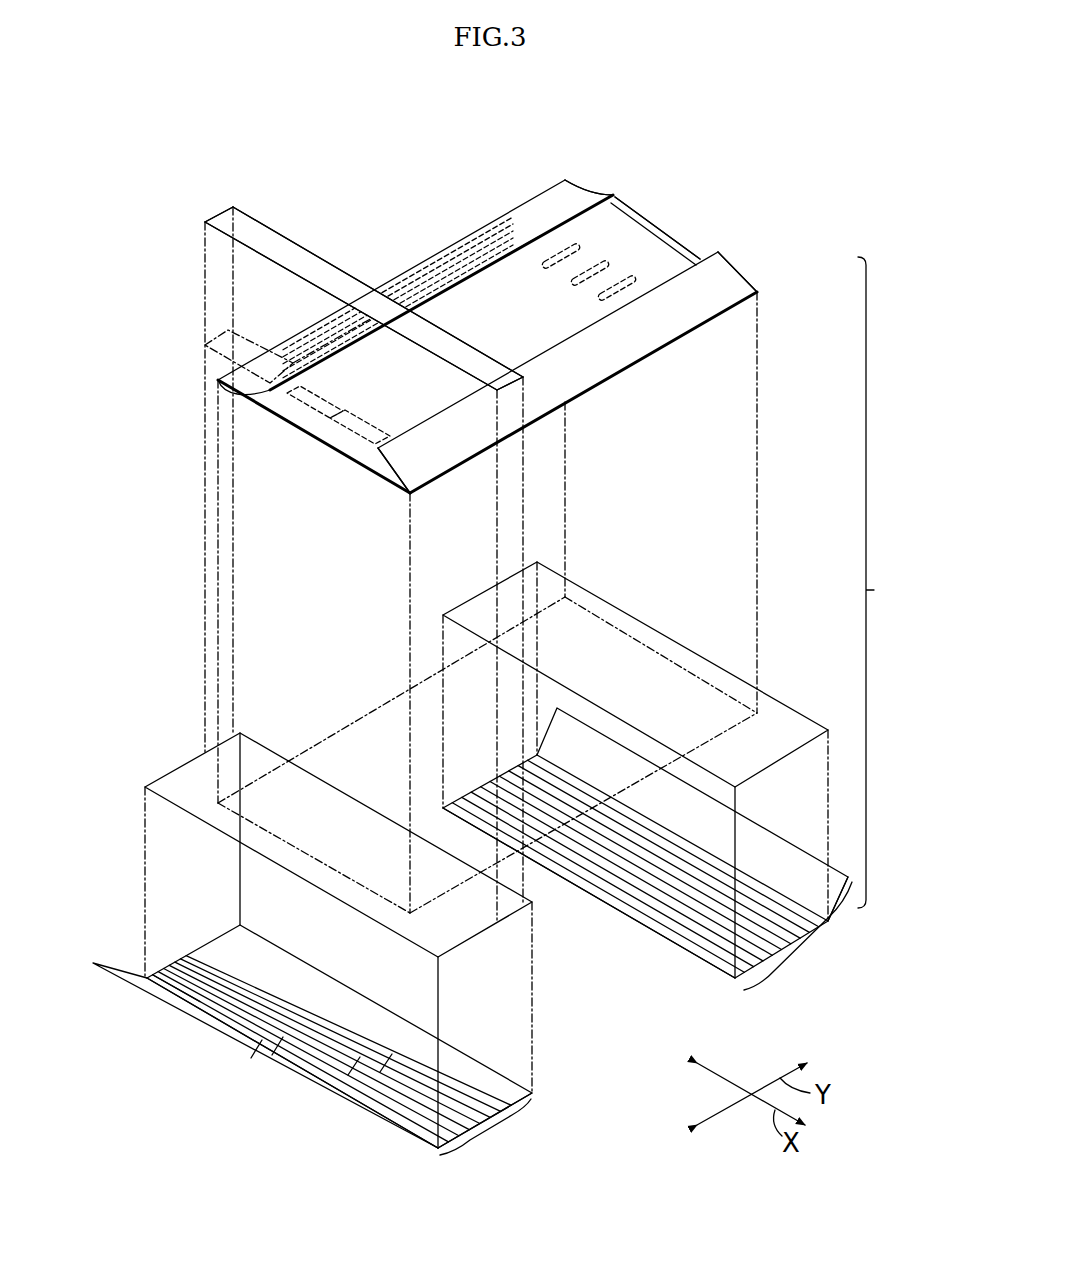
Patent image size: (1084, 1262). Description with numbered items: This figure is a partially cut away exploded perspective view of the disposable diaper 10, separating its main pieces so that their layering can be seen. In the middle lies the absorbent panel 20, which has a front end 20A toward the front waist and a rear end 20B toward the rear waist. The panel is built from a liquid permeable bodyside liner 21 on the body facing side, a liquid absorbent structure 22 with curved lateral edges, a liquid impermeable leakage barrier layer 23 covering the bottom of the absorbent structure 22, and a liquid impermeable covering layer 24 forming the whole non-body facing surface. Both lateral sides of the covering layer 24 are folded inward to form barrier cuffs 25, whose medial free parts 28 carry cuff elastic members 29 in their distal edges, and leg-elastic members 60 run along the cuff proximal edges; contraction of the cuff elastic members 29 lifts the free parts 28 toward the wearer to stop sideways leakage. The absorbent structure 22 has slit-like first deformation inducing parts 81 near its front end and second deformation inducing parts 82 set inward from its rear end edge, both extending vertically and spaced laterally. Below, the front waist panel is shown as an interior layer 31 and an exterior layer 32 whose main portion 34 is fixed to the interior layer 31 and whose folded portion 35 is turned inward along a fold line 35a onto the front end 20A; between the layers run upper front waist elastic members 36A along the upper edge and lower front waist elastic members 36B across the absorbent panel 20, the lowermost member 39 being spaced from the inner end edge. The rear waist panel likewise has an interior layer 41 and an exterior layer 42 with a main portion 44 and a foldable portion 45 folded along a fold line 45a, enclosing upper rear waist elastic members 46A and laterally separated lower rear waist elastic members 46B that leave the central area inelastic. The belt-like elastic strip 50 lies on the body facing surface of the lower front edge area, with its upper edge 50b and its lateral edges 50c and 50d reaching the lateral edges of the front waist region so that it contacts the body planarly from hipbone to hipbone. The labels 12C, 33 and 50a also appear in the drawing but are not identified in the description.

The disposable diaper 10 is at (884, 582).
The accommodating portion 12C is at (572, 313).
The absorbent panel 20 is at (716, 321).
The front end of absorbent panel 20A is at (390, 443).
The rear end of absorbent panel 20B is at (637, 257).
The bodyside liner 21 is at (427, 257).
The liquid absorbent structure 22 is at (485, 280).
The leakage barrier layer 23 is at (622, 198).
The covering layer 24 is at (412, 477).
The barrier cuffs 25 is at (548, 207).
The free parts 28 is at (732, 292).
The cuff elastic members 29 is at (545, 252).
The interior layer 31 is at (175, 783).
The exterior layer 32 is at (168, 1010).
The end surface 33 is at (497, 1090).
The main portion 34 is at (485, 1136).
The folded portion 35 is at (215, 1028).
The fold line 35a is at (182, 1000).
The upper front waist elastic members 36A is at (273, 1037).
The lower front waist elastic members 36B is at (387, 1057).
The lowermost lower front waist elastic member 39 is at (280, 980).
The interior layer 41 is at (630, 633).
The exterior layer 42 is at (605, 906).
The main portion 44 is at (798, 937).
The foldable portion 45 is at (805, 873).
The fold line 45a is at (829, 906).
The upper rear waist elastic members 46A is at (700, 870).
The lower rear waist elastic members 46B is at (700, 913).
The elastic strip 50 is at (259, 230).
The upper surface 50a is at (322, 257).
The upper edge of elastic strip 50b is at (272, 263).
The lateral edge of elastic strip 50c is at (222, 209).
The lateral edge of elastic strip 50d is at (548, 415).
The leg-elastic members 60 is at (463, 300).
The first deformation inducing parts 81 is at (323, 440).
The second deformation inducing parts 82 is at (636, 252).